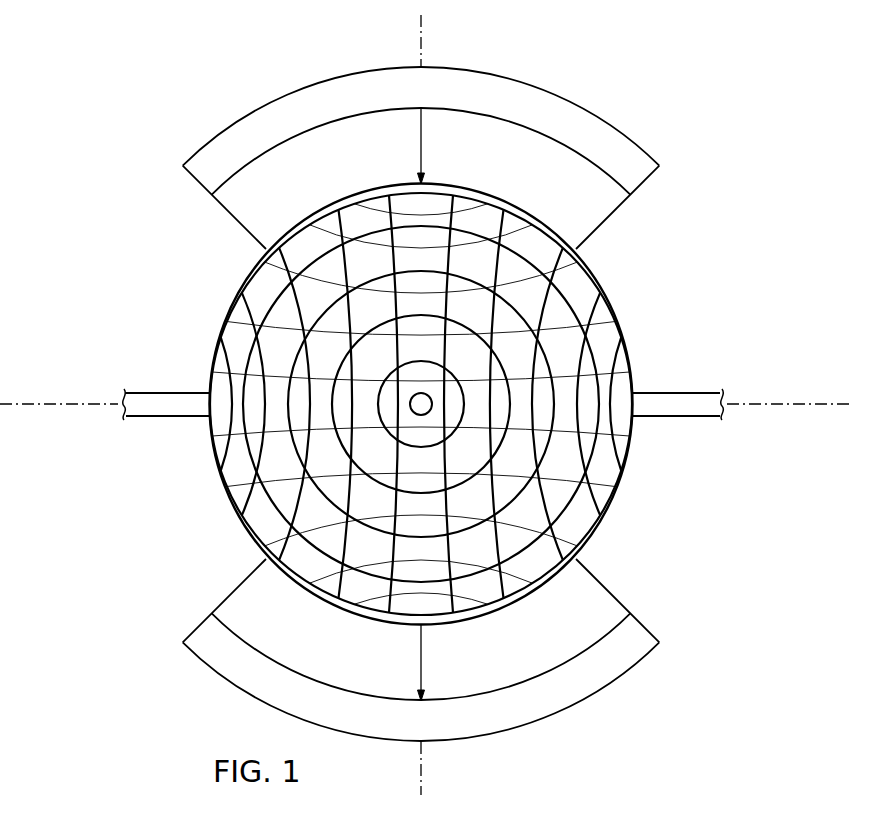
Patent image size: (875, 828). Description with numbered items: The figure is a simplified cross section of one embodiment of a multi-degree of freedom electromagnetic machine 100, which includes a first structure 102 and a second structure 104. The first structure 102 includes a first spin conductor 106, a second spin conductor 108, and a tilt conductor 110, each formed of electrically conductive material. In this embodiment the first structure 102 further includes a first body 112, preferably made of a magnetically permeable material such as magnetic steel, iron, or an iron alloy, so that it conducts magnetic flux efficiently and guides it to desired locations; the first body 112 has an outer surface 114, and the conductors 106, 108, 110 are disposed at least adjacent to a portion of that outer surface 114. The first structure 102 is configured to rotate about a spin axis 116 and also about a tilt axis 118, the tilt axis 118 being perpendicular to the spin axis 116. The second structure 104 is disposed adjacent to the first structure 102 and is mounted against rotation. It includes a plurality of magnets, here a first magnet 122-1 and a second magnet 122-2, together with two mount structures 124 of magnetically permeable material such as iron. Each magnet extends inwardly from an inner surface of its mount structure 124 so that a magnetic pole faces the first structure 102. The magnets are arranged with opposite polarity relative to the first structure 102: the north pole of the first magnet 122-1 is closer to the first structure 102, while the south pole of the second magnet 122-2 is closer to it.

The multi-degree of freedom electromagnetic machine 100 is at (757, 153).
The first structure 102 is at (343, 203).
The second structure 104 is at (608, 116).
The first spin conductor 106 is at (477, 233).
The second spin conductor 108 is at (392, 597).
The tilt conductor 110 is at (612, 359).
The first body 112 is at (609, 479).
The outer surface 114 is at (593, 272).
The spin axis 116 is at (822, 402).
The tilt axis 118 is at (432, 404).
The first magnet 122-1 is at (248, 166).
The second magnet 122-2 is at (598, 637).
The mount structure 124 is at (655, 163).